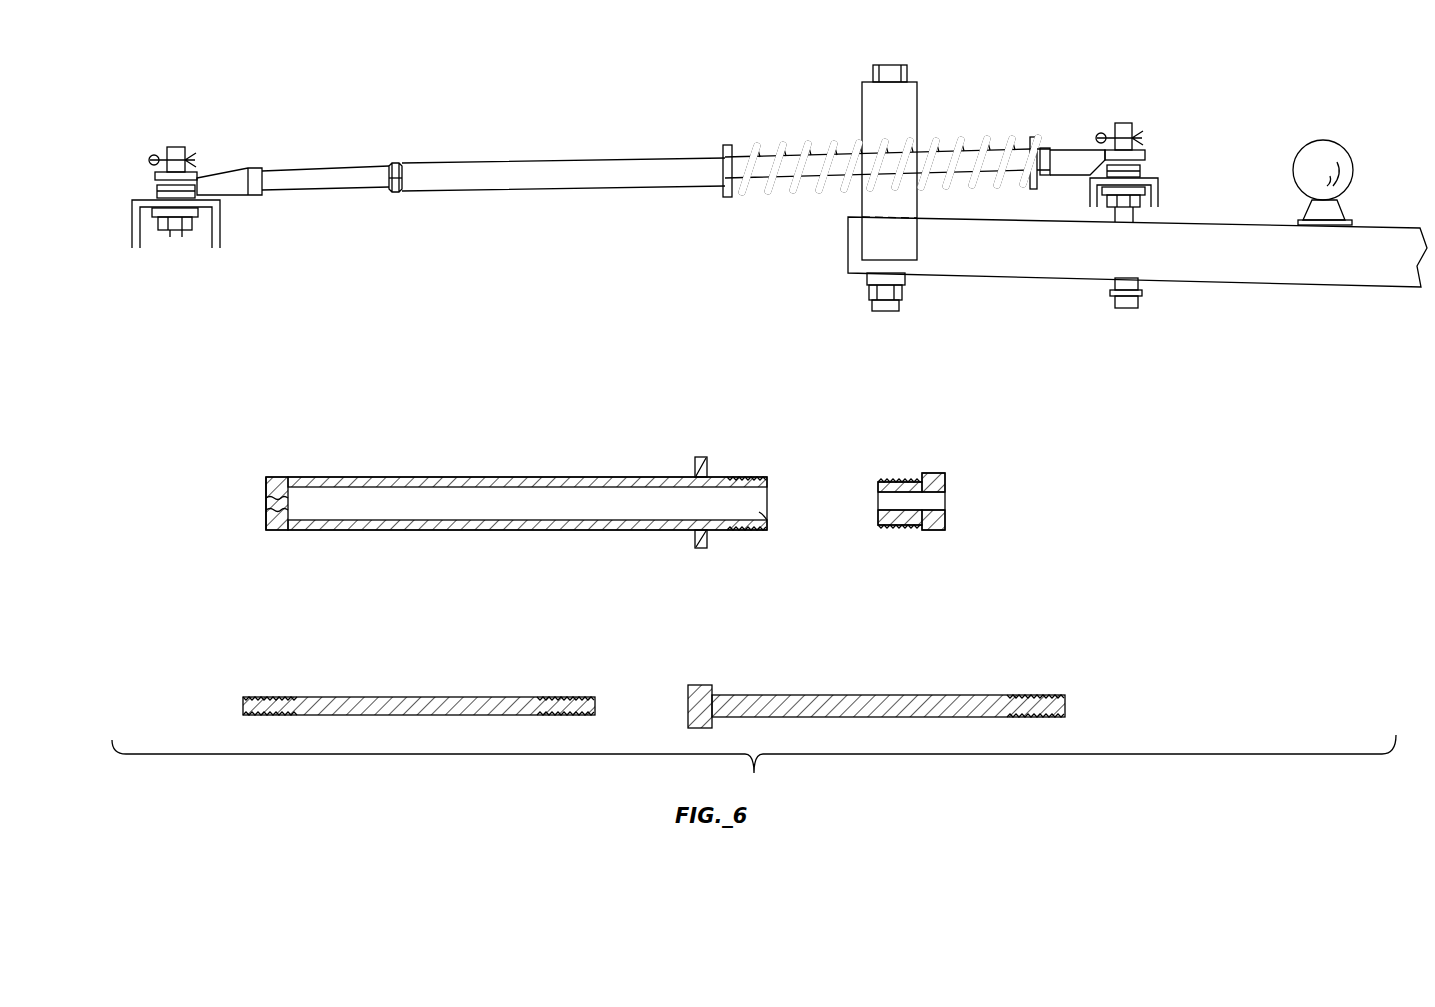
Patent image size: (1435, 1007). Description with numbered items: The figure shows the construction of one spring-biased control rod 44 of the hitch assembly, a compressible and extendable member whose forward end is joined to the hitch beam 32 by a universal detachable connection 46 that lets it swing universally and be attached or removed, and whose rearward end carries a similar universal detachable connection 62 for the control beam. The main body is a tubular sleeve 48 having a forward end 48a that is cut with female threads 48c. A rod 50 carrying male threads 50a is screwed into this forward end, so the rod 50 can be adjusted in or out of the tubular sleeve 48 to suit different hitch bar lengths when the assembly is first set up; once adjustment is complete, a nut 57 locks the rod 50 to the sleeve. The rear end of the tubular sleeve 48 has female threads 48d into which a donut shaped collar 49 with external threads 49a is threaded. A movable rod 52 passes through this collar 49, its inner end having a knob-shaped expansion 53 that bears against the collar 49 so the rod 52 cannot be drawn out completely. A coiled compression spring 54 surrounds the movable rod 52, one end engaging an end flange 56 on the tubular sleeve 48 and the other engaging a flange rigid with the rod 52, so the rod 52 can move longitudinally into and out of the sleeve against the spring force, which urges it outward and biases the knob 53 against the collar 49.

The hitch beam 32 is at (220, 246).
The control rod 44 is at (512, 170).
The universal detachable connection 46 is at (227, 171).
The tubular sleeve 48 is at (588, 161).
The forward end of tubular sleeve 48a is at (396, 160).
The female threads 48c is at (267, 512).
The female threads 48d is at (768, 512).
The donut shaped collar 49 is at (937, 473).
The external threads 49a is at (910, 480).
The rod 50 is at (319, 168).
The male threads 50a is at (560, 697).
The movable rod 52 is at (961, 152).
The knob-shaped expansion 53 is at (702, 685).
The coiled compression spring 54 is at (803, 147).
The end flange 56 is at (706, 457).
The nut 57 is at (401, 195).
The universal detachable connection 62 is at (1075, 150).